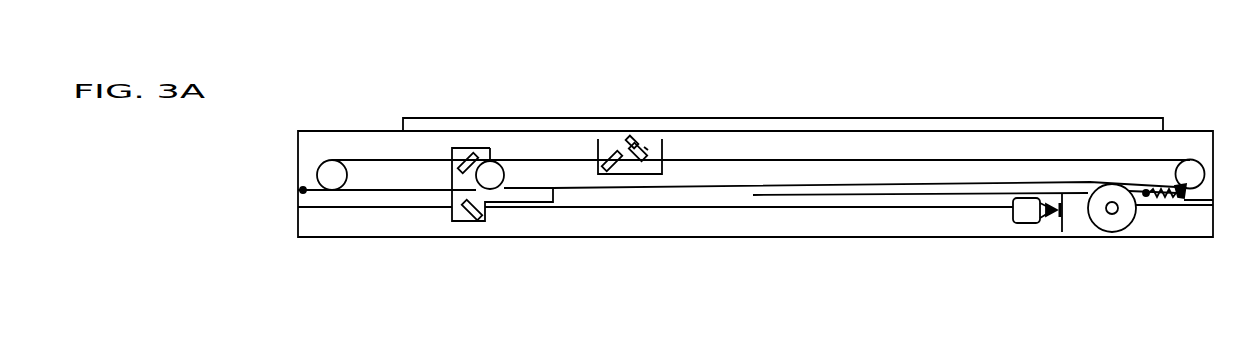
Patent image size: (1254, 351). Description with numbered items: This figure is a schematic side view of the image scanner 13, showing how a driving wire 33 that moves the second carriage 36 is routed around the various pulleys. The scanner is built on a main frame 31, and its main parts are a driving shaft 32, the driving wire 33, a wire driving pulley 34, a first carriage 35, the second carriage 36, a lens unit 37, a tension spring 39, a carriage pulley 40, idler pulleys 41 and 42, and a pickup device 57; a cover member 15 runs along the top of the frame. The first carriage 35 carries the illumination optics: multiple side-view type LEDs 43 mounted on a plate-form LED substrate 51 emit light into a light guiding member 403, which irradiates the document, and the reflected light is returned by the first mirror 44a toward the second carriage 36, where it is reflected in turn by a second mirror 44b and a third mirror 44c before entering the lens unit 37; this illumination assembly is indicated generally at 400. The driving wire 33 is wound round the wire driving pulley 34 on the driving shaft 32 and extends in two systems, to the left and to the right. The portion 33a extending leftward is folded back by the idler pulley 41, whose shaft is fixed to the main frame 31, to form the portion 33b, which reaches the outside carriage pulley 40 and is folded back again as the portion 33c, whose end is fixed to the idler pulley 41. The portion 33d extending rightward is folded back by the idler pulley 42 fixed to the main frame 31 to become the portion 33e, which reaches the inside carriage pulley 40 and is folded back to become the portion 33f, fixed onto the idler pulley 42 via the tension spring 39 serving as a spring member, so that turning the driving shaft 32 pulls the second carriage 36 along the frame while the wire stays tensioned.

The image scanner 13 is at (935, 93).
The cover / frame 15 is at (862, 118).
The main frame 31 is at (325, 132).
The driving shaft 32 is at (1110, 213).
The driving wire 33 is at (740, 153).
The portion of the driving wire 33a is at (835, 189).
The portion of the driving wire 33b is at (372, 160).
The portion of the driving wire 33c is at (313, 193).
The portion of the driving wire 33d is at (1147, 183).
The portion of the driving wire 33e is at (788, 160).
The portion of the driving wire 33f is at (753, 196).
The wire driving pulley 34 is at (1126, 227).
The first carriage 35 is at (662, 167).
The second carriage 36 is at (450, 155).
The lens unit 37 is at (1015, 223).
The tension spring 39 is at (1158, 197).
The carriage pulley 40 is at (498, 173).
The idler pulley 41 is at (332, 167).
The idler pulley 42 is at (1202, 173).
The LED 43 is at (645, 144).
The first mirror 44a is at (616, 176).
The second mirror 44b is at (467, 152).
The third mirror 44c is at (463, 220).
The LED substrate 51 is at (648, 149).
The pickup device 57 is at (1052, 219).
The optical unit 400 is at (638, 114).
The light guiding member 403 is at (633, 135).